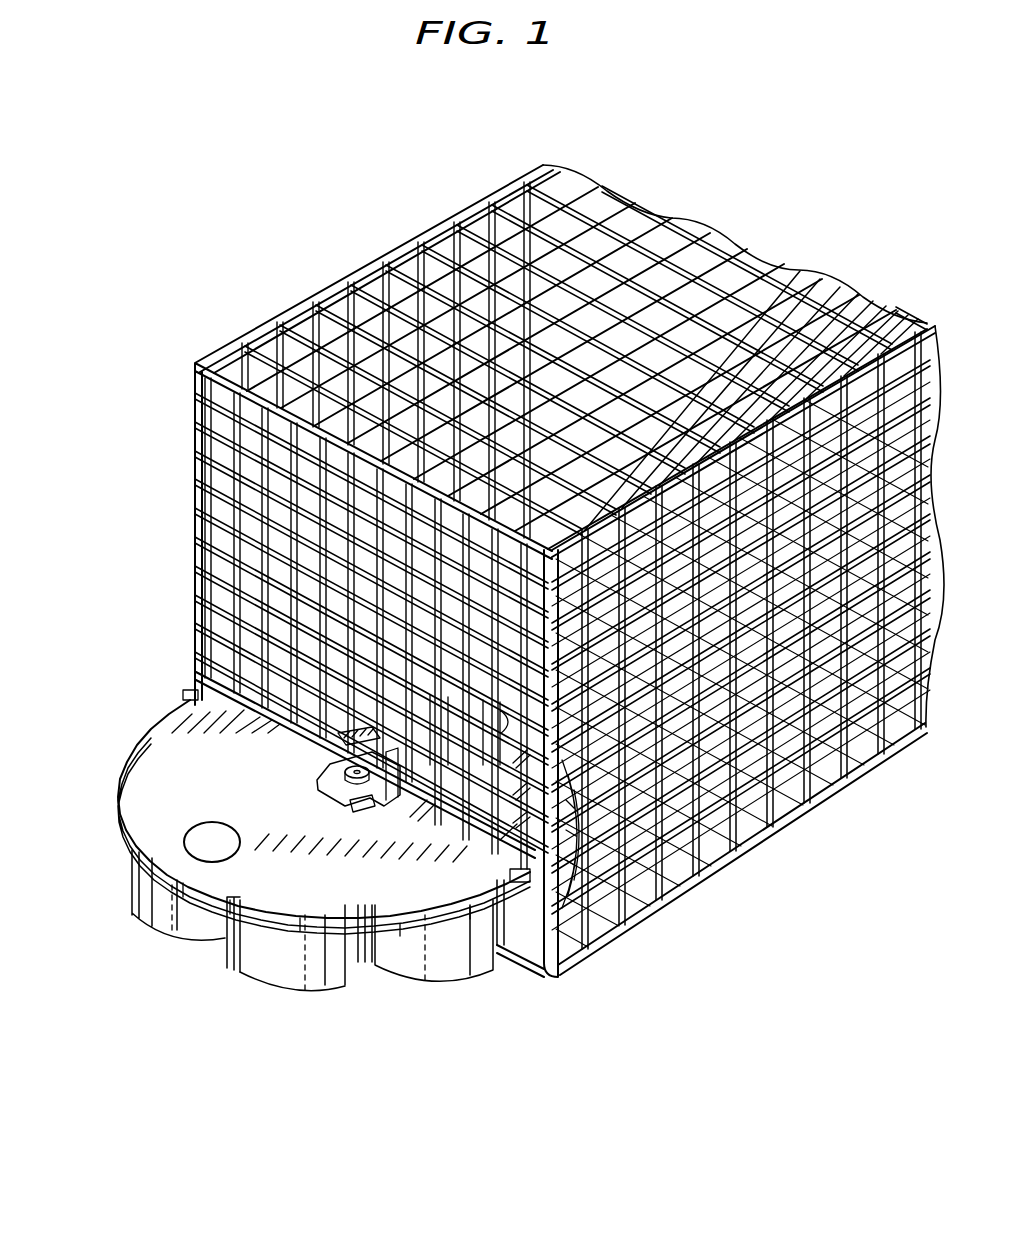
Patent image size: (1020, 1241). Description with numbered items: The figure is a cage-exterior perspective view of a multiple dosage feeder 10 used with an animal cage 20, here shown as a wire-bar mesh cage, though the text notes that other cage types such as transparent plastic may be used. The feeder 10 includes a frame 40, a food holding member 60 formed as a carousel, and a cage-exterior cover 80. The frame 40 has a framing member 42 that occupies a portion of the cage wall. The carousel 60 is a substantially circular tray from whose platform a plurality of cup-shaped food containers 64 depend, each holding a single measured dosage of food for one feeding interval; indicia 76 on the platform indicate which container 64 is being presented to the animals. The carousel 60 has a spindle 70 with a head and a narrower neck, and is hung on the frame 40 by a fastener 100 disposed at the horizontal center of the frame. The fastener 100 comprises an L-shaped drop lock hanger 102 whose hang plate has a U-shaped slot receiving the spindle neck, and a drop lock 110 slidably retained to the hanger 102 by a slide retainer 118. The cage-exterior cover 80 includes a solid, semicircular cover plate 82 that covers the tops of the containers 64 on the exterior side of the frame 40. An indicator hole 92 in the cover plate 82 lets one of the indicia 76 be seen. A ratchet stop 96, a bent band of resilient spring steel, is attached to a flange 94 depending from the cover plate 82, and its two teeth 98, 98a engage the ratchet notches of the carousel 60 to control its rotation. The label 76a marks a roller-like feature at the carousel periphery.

The multiple dosage feeder 10 is at (86, 746).
The animal cage 20 is at (569, 603).
The frame 40 is at (184, 530).
The framing member 42 is at (580, 888).
The food holding member 60 is at (297, 968).
The food containers 64 is at (133, 879).
The spindle 70 is at (308, 774).
The indicia 76 is at (222, 850).
The drive roller 76a is at (290, 961).
The cage-exterior cover 80 is at (166, 704).
The cover plate 82 is at (201, 784).
The indicator hole 92 is at (206, 823).
The flange 94 is at (246, 957).
The ratchet stop 96 is at (213, 898).
The tooth 98 is at (372, 948).
The tooth 98a is at (150, 905).
The fastener 100 is at (388, 814).
The drop lock hanger 102 is at (318, 777).
The drop lock 110 is at (362, 803).
The slide retainer 118 is at (406, 788).